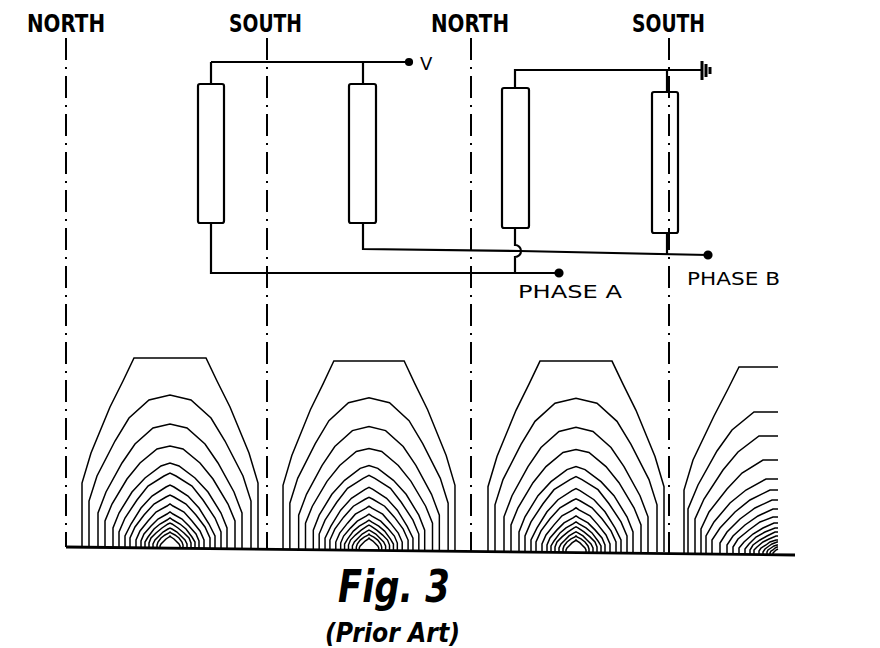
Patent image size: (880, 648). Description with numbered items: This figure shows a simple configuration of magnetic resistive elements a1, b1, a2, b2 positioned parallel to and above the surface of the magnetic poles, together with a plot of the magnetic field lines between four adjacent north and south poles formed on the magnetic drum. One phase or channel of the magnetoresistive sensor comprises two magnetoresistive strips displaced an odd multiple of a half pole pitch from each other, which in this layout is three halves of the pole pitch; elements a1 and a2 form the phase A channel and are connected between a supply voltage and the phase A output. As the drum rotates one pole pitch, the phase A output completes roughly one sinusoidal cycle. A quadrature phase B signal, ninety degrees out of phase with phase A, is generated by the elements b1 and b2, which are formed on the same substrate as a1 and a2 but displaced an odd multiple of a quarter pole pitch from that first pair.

The magnetic resistive element a1 is at (223, 142).
The magnetic resistive element b1 is at (377, 142).
The magnetic resistive element a2 is at (529, 158).
The magnetic resistive element b2 is at (680, 162).